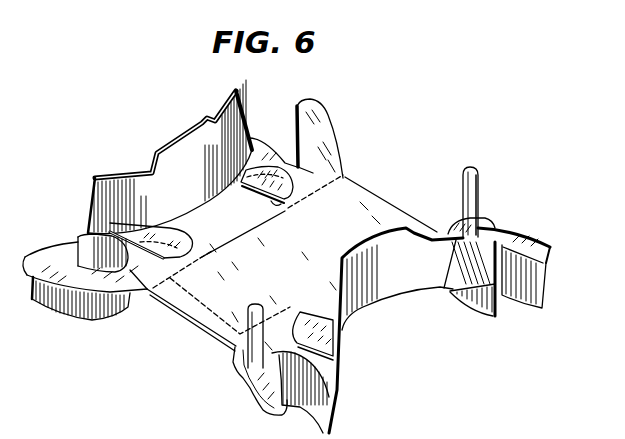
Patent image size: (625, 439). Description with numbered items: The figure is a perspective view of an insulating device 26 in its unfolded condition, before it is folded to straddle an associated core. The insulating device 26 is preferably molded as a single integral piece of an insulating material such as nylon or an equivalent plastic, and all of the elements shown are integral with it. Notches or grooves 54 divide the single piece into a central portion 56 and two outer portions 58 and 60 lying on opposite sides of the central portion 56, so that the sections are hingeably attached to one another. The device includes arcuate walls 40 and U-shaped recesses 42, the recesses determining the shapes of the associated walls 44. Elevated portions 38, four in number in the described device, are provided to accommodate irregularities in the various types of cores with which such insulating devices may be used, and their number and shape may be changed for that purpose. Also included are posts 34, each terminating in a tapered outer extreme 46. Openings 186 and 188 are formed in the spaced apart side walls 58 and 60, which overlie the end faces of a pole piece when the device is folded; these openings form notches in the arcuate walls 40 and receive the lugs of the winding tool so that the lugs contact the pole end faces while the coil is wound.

The insulating device 26 is at (204, 330).
The post 34 is at (481, 195).
The elevated portion 38 is at (303, 196).
The arcuate wall 40 is at (95, 181).
The U-shaped recess 42 is at (80, 258).
The wall 44 is at (317, 413).
The tapered outer extreme 46 is at (477, 171).
The notch or groove 54 is at (146, 294).
The central portion 56 is at (388, 208).
The outer portion 58 is at (332, 154).
The outer portion 60 is at (243, 374).
The opening 186 is at (247, 232).
The opening 188 is at (330, 300).